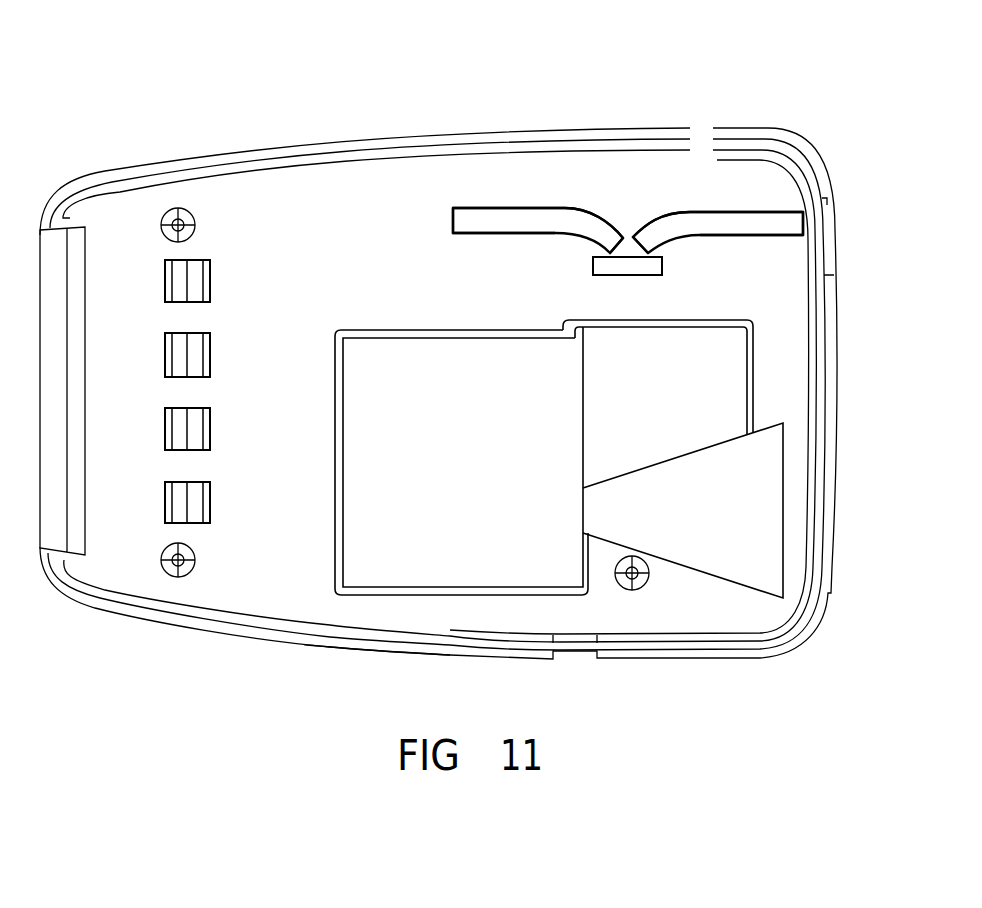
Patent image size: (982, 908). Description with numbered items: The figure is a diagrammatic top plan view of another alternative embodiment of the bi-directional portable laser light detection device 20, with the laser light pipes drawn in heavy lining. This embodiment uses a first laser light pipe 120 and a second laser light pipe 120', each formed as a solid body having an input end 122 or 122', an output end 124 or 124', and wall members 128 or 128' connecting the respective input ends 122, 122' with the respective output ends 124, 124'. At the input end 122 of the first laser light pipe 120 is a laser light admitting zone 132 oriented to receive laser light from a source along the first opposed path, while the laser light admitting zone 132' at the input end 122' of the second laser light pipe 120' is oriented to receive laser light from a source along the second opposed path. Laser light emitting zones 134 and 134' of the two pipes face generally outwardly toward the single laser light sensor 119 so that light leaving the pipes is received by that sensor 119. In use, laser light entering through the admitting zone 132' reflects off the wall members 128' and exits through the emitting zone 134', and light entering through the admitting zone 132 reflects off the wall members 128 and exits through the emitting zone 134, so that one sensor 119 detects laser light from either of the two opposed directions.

The bi-directional portable laser light detection device 20 is at (353, 72).
The laser light sensor 119 is at (617, 275).
The first laser light pipe 120 is at (715, 168).
The second laser light pipe 120' is at (524, 170).
The input end 122 is at (765, 204).
The input end 122' is at (441, 238).
The output end 124 is at (661, 205).
The output end 124' is at (589, 204).
The wall members 128 is at (739, 255).
The wall members 128' is at (509, 253).
The laser light admitting zone 132 is at (857, 208).
The laser light admitting zone 132' is at (405, 206).
The laser light emitting zone 134 is at (674, 276).
The laser light emitting zone 134' is at (572, 276).